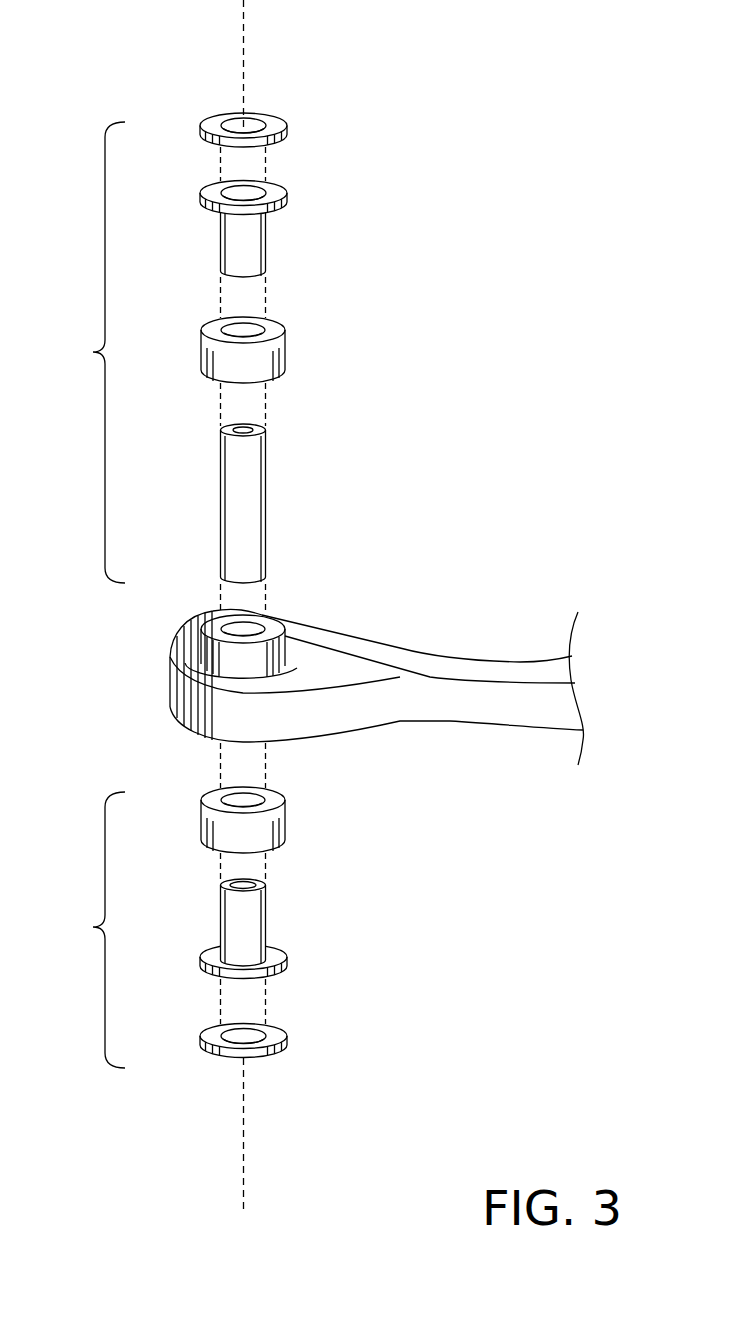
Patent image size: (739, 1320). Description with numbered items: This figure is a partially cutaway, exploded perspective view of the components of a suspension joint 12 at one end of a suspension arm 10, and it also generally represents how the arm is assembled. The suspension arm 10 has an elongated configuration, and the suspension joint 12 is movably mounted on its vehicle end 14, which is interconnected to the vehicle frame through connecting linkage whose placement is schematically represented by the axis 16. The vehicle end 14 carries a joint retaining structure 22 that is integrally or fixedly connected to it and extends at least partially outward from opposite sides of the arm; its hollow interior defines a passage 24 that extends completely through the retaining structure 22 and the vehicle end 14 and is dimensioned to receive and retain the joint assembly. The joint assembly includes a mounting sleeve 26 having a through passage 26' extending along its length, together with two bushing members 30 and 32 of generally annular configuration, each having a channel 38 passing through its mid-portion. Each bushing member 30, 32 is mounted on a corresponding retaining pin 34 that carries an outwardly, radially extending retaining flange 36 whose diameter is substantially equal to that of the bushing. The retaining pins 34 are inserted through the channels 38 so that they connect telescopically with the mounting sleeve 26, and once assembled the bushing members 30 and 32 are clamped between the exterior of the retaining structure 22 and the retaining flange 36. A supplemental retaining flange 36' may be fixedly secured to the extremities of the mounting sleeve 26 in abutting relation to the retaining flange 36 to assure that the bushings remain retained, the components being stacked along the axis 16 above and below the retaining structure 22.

The suspension arm 10 is at (367, 644).
The suspension joint 12 is at (92, 595).
The vehicle end 14 is at (378, 628).
The axis 16 is at (244, 22).
The joint retaining structure 22 is at (280, 656).
The passage 24 is at (243, 636).
The mounting sleeve 26 is at (333, 503).
The through passage 26' is at (321, 422).
The bushing member 30 is at (276, 352).
The bushing member 32 is at (274, 838).
The retaining pin 34 is at (262, 237).
The retaining flange 36 is at (329, 569).
The supplemental retaining flange 36' is at (333, 576).
The channel 38 is at (248, 318).